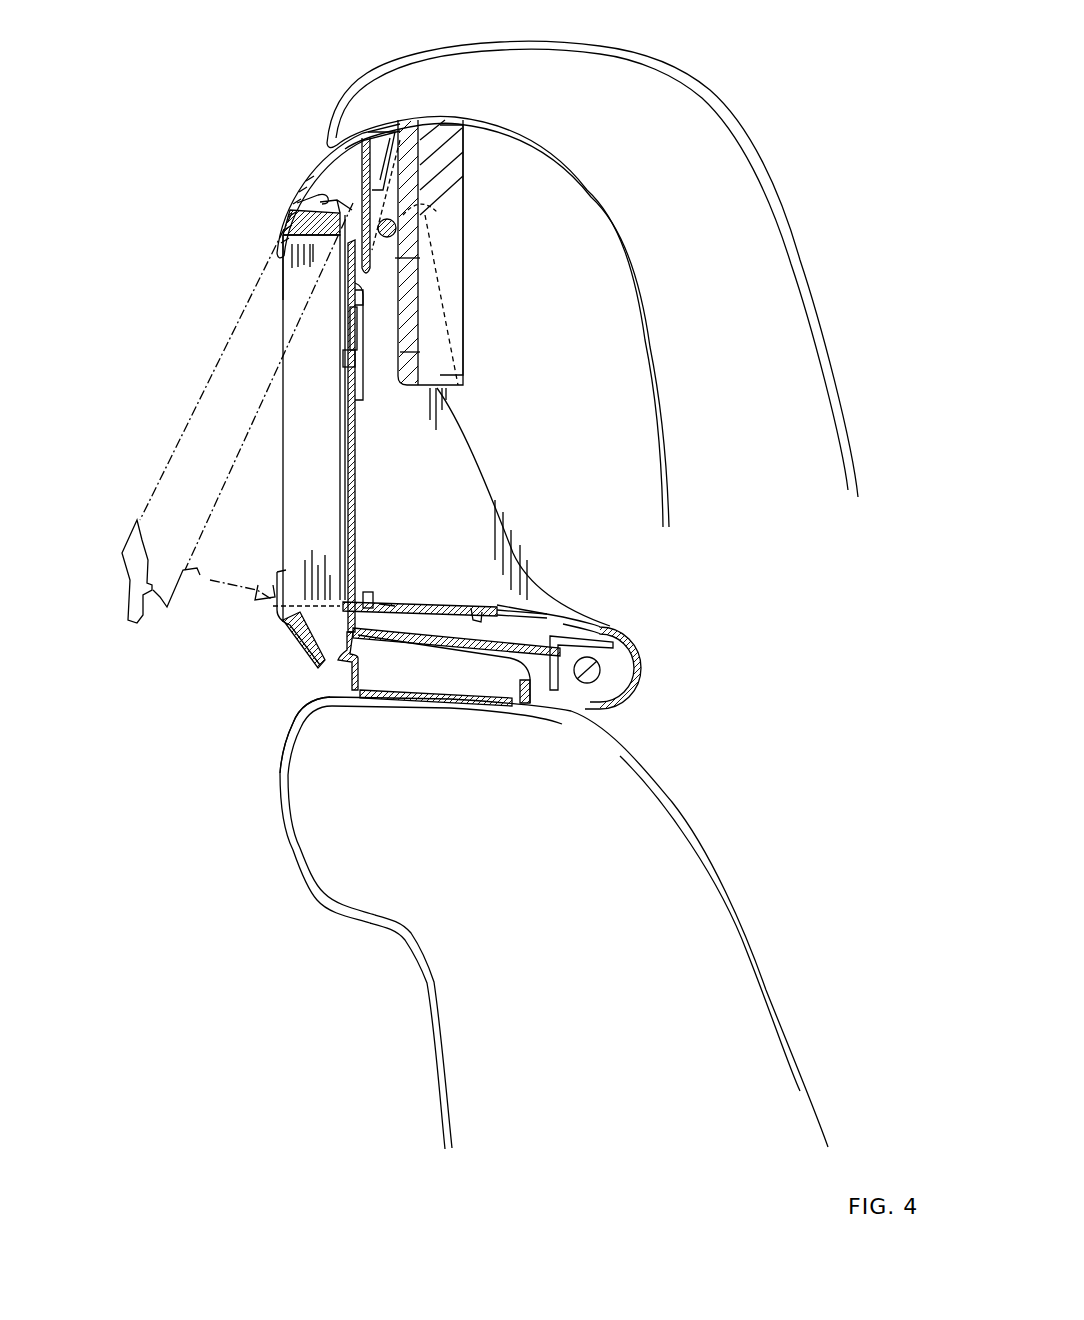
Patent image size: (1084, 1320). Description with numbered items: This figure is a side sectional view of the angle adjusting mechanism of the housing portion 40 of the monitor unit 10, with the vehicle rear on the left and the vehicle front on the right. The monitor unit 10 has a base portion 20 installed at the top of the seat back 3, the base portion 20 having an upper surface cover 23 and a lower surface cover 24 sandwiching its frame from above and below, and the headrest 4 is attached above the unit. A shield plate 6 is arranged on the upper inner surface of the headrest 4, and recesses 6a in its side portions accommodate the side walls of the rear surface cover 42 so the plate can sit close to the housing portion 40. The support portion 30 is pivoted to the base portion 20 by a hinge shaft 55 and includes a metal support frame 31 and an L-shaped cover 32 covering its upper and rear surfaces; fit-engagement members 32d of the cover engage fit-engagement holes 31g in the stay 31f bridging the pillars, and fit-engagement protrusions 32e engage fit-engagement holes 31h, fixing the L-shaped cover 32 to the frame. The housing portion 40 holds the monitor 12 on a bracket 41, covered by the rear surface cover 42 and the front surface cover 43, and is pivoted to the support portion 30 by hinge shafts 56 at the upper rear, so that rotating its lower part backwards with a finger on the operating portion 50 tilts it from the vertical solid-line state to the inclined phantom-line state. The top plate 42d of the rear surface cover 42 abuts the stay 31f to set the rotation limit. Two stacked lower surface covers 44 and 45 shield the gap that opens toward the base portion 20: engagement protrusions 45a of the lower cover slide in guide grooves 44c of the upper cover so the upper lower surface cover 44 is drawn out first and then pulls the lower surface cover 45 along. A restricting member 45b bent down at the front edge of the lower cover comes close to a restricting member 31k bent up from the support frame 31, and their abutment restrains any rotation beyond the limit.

The seat back 3 is at (750, 972).
The headrest 4 is at (683, 115).
The shield plate 6 is at (415, 316).
The recesses 6a is at (452, 283).
The monitor unit 10 is at (150, 262).
The monitor 12 is at (300, 485).
The base portion 20 is at (347, 683).
The upper surface cover 23 is at (482, 690).
The lower surface cover 24 is at (452, 706).
The support portion 30 is at (368, 477).
The support frame 31 is at (540, 648).
The stay 31f is at (342, 290).
The fit-engagement holes 31g is at (345, 322).
The fit-engagement holes 31h is at (345, 350).
The restricting member 31k is at (420, 607).
The L-shaped cover 32 is at (602, 638).
The fit-engagement members 32d is at (405, 262).
The fit-engagement protrusions 32e is at (402, 354).
The housing portion 40 is at (285, 268).
The bracket 41 is at (340, 552).
The rear surface cover 42 is at (435, 440).
The top plate 42d is at (405, 172).
The front surface cover 43 is at (290, 625).
The lower surface cover 44 is at (338, 670).
The guide grooves 44c is at (385, 606).
The lower surface cover 45 is at (450, 606).
The engagement protrusions 45a is at (375, 600).
The restricting member 45b is at (485, 622).
The operating portion 50 is at (312, 648).
The hinge shaft 55 is at (602, 670).
The hinge shafts 56 is at (400, 224).